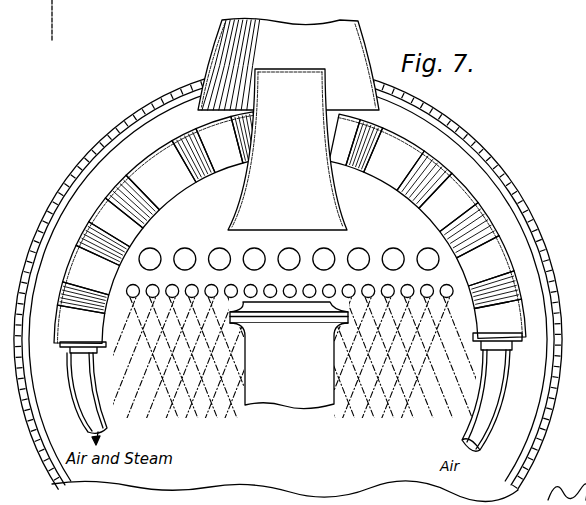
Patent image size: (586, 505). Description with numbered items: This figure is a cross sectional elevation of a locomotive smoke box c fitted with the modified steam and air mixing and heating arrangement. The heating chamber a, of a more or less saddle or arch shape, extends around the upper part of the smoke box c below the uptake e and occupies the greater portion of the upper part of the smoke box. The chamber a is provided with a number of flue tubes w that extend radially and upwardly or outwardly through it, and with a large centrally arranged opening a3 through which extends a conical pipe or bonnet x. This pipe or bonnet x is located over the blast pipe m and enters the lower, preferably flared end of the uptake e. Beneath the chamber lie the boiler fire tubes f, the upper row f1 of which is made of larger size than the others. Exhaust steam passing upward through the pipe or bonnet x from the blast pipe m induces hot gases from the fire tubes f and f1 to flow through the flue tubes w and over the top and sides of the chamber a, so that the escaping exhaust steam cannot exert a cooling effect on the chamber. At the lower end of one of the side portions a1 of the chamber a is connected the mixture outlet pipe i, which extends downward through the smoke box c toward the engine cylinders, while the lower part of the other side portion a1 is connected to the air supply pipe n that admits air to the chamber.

The uptake e is at (288, 64).
The pipe or bonnet x is at (287, 149).
The heating chamber a is at (153, 153).
The smoke box c is at (288, 281).
The flue tubes w is at (208, 178).
The centrally arranged opening a3 is at (341, 150).
The upper row of fire tubes f1 is at (325, 250).
The fire tubes f is at (171, 286).
The side portions a1 is at (290, 321).
The blast pipe m is at (289, 355).
The mixture outlet pipe i is at (74, 380).
The air supply pipe n is at (484, 424).